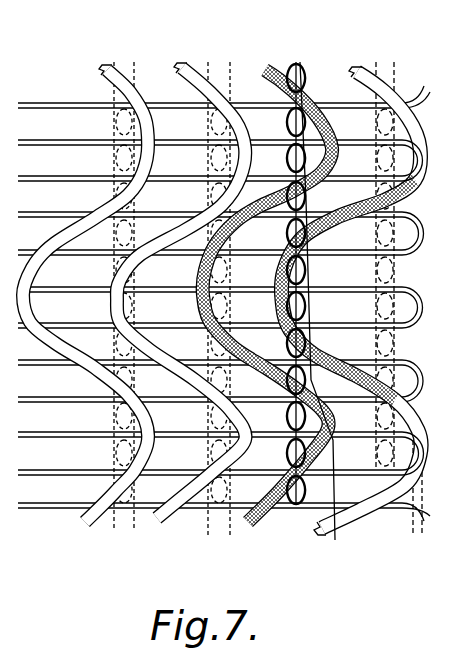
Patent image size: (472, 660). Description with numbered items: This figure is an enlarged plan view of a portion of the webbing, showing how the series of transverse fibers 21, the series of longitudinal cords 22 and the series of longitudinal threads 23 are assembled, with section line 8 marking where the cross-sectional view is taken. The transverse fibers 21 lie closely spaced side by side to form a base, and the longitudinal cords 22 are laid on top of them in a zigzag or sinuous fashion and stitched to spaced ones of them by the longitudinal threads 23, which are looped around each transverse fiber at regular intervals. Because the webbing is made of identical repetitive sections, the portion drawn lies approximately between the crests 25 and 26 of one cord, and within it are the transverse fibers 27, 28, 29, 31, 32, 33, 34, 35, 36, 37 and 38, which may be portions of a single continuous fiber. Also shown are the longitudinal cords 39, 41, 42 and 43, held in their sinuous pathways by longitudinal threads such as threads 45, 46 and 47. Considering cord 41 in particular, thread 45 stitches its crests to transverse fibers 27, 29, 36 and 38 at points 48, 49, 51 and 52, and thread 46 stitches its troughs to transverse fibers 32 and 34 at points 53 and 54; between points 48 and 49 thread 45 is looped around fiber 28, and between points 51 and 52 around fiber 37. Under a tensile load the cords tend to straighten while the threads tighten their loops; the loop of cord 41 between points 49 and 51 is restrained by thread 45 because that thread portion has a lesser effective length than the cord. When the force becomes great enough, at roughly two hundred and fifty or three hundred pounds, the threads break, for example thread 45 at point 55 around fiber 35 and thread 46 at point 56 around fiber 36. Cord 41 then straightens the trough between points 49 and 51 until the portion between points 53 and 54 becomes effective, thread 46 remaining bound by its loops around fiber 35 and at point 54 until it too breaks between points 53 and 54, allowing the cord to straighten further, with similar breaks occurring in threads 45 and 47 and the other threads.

The section line 8- 8 is at (277, 612).
The transverse fibers 21 is at (421, 310).
The longitudinal cords 22 is at (366, 68).
The longitudinal threads 23 is at (338, 537).
The crest 25 is at (418, 445).
The crest 26 is at (420, 142).
The transverse fiber 27 is at (343, 477).
The transverse fiber 28 is at (340, 437).
The transverse fiber 29 is at (332, 400).
The transverse fiber 31 is at (400, 366).
The transverse fiber 32 is at (338, 328).
The transverse fiber 33 is at (330, 282).
The transverse fiber 34 is at (336, 258).
The transverse fiber 35 is at (398, 214).
The transverse fiber 36 is at (342, 182).
The transverse fiber 37 is at (346, 146).
The transverse fiber 38 is at (358, 108).
The longitudinal cord 39 is at (345, 517).
The longitudinal cord 41 is at (265, 522).
The longitudinal cord 42 is at (170, 523).
The longitudinal cord 43 is at (86, 525).
The longitudinal thread 45 is at (334, 541).
The longitudinal thread 46 is at (243, 538).
The longitudinal thread 47 is at (165, 527).
The stitching point 48 is at (285, 465).
The stitching point 49 is at (279, 400).
The stitching point 51 is at (287, 163).
The stitching point 52 is at (287, 126).
The stitching point 53 is at (222, 322).
The stitching point 54 is at (240, 249).
The break point 55 is at (210, 206).
The break point 56 is at (205, 158).